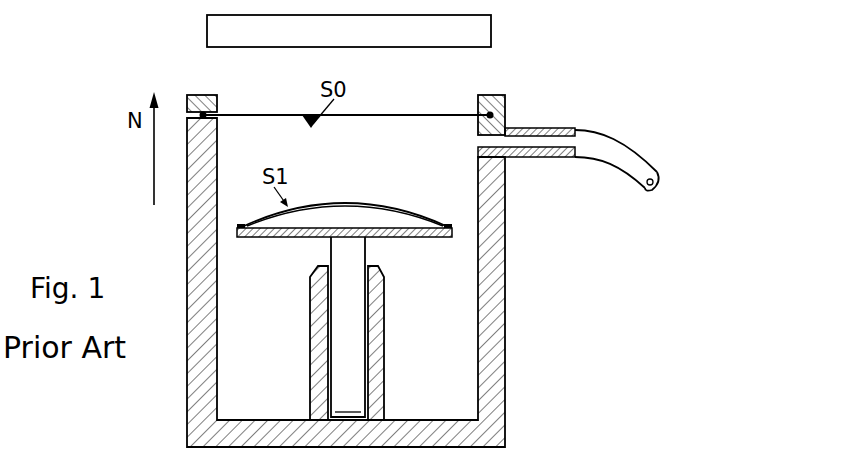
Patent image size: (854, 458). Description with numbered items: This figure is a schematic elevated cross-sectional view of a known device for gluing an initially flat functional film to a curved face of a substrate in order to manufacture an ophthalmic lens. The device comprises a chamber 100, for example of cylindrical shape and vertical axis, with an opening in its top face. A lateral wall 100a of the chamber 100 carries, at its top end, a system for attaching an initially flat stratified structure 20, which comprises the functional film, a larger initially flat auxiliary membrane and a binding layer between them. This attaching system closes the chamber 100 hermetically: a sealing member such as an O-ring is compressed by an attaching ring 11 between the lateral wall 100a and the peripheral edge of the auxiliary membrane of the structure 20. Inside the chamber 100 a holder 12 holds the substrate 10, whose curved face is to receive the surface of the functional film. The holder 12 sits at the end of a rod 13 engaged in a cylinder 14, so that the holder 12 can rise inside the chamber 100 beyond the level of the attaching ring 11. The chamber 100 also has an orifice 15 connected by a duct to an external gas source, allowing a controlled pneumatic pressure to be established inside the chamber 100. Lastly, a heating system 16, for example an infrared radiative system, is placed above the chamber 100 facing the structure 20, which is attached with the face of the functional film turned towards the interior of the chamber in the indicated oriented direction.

The substrate 10 is at (402, 212).
The attaching ring 11 is at (505, 97).
The holder 12 is at (432, 236).
The rod 13 is at (342, 367).
The cylinder 14 is at (373, 392).
The orifice 15 is at (515, 128).
The heating system 16 is at (477, 30).
The stratified structure 20 is at (381, 115).
The chamber 100 is at (530, 238).
The lateral wall 100a is at (487, 330).